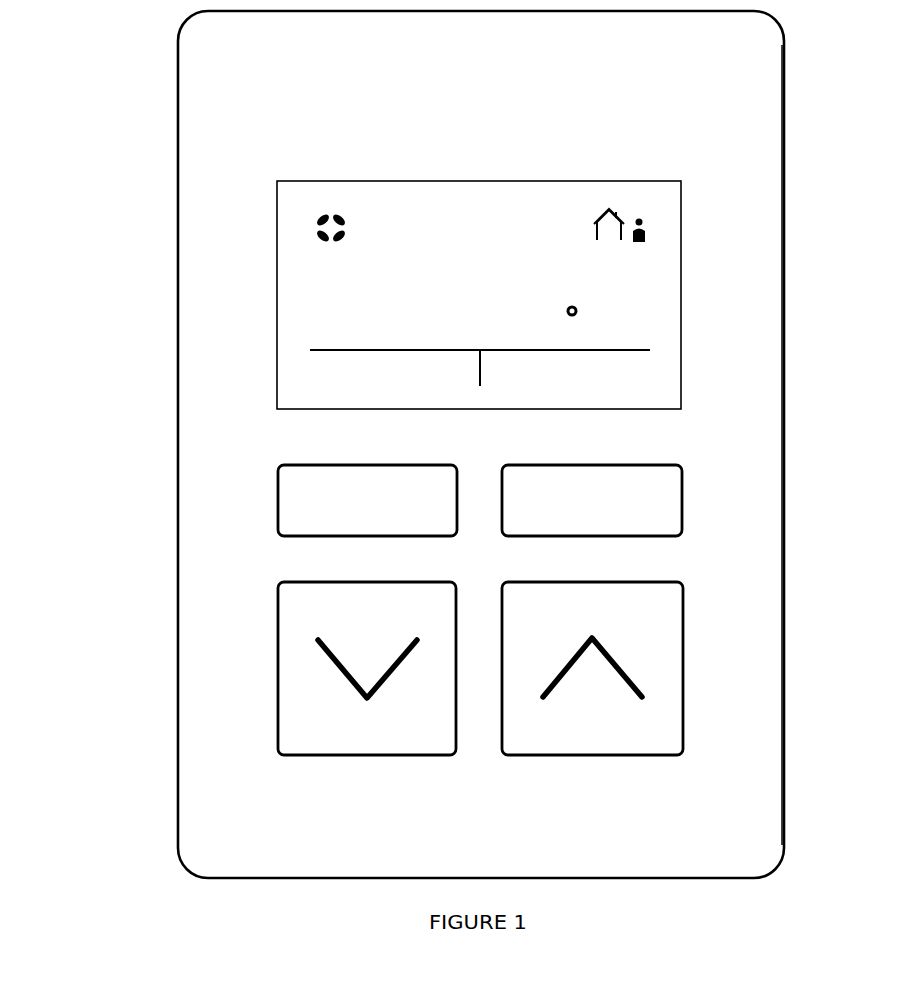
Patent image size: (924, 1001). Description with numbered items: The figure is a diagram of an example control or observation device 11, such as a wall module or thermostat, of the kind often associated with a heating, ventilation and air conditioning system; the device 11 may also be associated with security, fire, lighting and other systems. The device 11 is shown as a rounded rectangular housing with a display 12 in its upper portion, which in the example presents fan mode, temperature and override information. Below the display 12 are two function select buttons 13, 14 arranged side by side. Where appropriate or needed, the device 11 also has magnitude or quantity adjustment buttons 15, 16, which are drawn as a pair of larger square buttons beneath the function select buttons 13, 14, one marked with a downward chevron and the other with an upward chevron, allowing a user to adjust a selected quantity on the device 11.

The device 11 is at (813, 130).
The display 12 is at (473, 181).
The function select button 13 is at (414, 463).
The function select button 14 is at (610, 463).
The magnitude or quantity adjustment button 15 is at (410, 580).
The magnitude or quantity adjustment button 16 is at (623, 580).